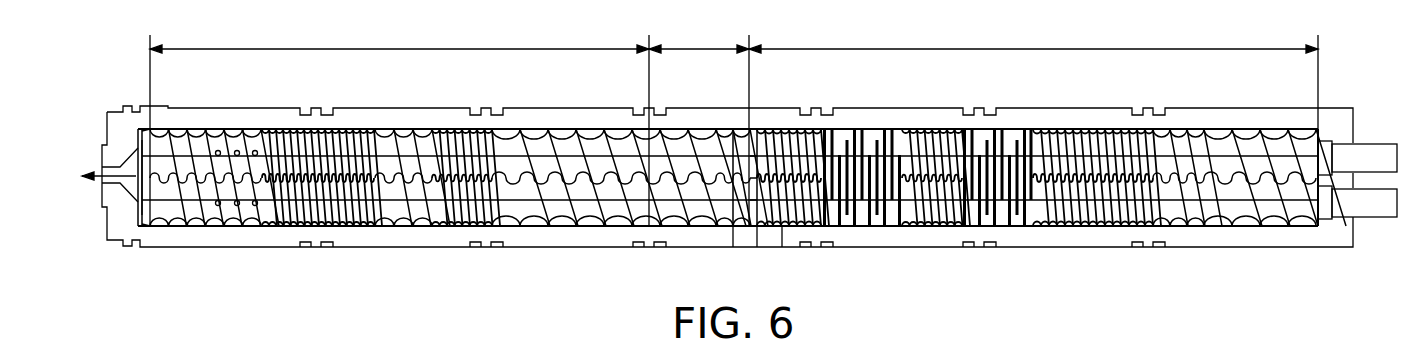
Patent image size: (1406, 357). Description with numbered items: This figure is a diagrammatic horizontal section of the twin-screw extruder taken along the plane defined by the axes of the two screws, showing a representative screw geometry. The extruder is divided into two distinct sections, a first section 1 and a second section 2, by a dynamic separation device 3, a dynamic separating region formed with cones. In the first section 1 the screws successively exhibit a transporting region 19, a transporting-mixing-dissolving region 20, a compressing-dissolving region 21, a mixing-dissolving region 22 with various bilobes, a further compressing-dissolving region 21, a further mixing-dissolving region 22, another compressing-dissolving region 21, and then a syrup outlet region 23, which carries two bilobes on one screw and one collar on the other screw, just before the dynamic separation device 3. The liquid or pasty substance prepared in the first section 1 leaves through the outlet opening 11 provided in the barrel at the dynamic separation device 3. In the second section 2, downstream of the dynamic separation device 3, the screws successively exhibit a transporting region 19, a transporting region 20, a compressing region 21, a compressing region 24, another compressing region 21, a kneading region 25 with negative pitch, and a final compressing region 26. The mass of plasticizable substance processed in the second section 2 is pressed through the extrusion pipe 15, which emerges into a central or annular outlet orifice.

The first section 1 is at (1033, 78).
The second section 2 is at (399, 126).
The dynamic separation device 3 is at (699, 126).
The outlet opening 11 is at (775, 248).
The extrusion pipe 15 is at (100, 166).
The transporting region 19 is at (623, 226).
The transporting-mixing-dissolving region 20 is at (530, 226).
The compressing-dissolving region 21 is at (356, 226).
The mixing-dissolving region 22 is at (858, 226).
The syrup outlet region 23 is at (755, 213).
The compressing region 24 is at (418, 226).
The kneading region 25 is at (245, 226).
The compressing region 26 is at (187, 226).